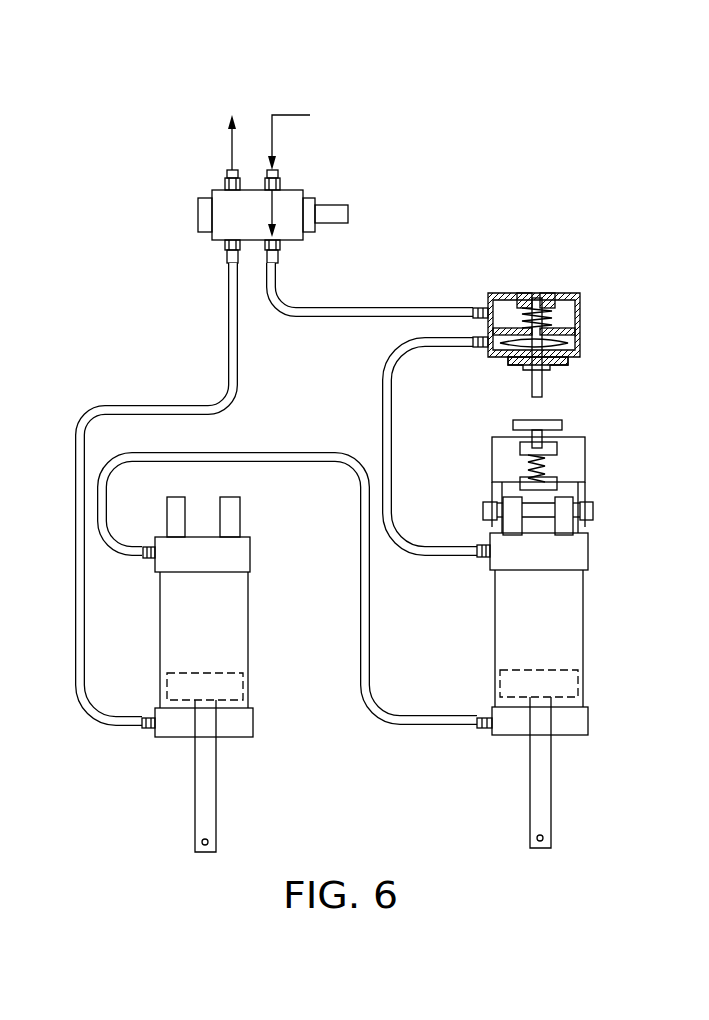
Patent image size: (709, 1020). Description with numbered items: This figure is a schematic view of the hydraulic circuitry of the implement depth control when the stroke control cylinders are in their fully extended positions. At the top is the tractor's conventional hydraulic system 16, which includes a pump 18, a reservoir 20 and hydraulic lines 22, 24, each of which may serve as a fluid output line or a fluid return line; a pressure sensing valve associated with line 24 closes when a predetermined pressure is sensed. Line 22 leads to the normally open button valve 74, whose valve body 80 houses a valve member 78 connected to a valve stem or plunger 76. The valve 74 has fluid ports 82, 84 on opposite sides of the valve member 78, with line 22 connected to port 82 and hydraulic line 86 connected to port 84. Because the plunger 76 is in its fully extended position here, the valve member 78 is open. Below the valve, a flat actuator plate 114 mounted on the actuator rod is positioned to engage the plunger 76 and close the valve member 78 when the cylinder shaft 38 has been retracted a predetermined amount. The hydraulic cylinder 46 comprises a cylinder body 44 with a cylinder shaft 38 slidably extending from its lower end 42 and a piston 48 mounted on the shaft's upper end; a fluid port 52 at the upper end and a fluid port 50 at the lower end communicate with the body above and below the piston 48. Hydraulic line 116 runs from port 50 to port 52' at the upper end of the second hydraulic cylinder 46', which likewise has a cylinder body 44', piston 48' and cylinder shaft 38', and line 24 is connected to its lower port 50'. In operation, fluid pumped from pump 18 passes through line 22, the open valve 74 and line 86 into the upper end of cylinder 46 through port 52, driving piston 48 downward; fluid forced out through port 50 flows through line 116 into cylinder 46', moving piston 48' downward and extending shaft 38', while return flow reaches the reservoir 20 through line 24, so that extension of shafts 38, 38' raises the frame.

The hydraulic system 16 is at (392, 166).
The pump 18 is at (373, 102).
The reservoir 20 is at (252, 82).
The hydraulic line 22 is at (285, 272).
The hydraulic line 24 is at (227, 328).
The button valve 74 is at (549, 288).
The valve body 80 is at (577, 293).
The valve member 78 is at (573, 340).
The valve stem or plunger 76 is at (543, 385).
The fluid port 82 is at (481, 305).
The fluid port 84 is at (483, 350).
The hydraulic line 86 is at (397, 472).
The actuator plate 114 is at (562, 425).
The hydraulic line 116 is at (373, 663).
The hydraulic cylinder 46 is at (550, 633).
The fluid port 52 is at (505, 517).
The cylinder body 44 is at (498, 638).
The piston 48 is at (587, 680).
The lower end 42 is at (570, 735).
The cylinder shaft 38 is at (589, 772).
The fluid port 50 is at (468, 760).
The hydraulic cylinder 46' is at (238, 660).
The fluid port 52' is at (196, 520).
The cylinder body 44' is at (247, 640).
The piston 48' is at (257, 697).
The cylinder shaft 38' is at (256, 776).
The fluid port 50' is at (148, 771).